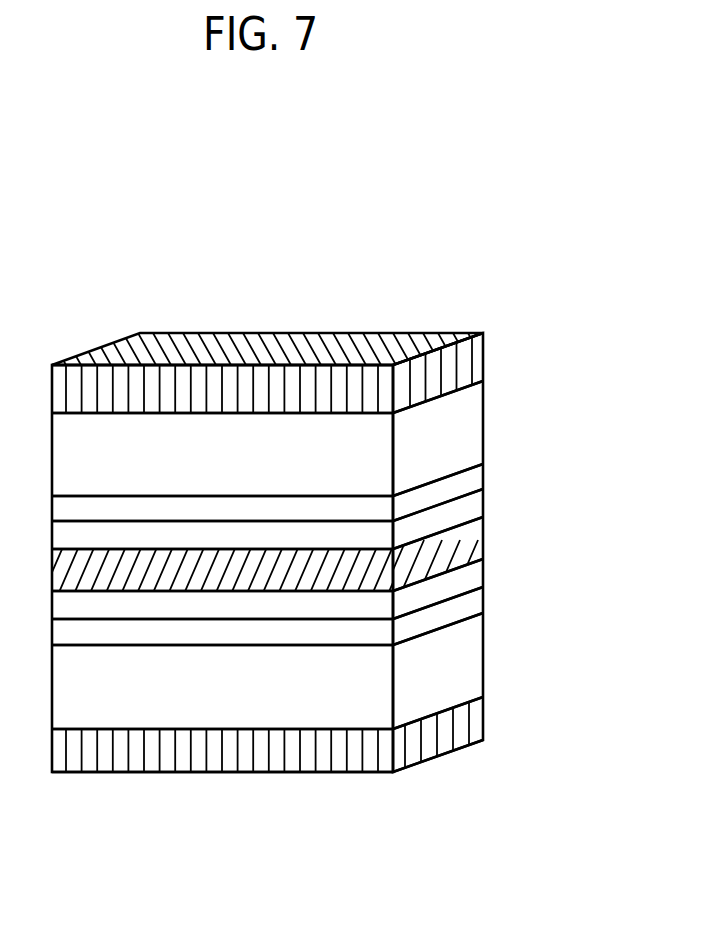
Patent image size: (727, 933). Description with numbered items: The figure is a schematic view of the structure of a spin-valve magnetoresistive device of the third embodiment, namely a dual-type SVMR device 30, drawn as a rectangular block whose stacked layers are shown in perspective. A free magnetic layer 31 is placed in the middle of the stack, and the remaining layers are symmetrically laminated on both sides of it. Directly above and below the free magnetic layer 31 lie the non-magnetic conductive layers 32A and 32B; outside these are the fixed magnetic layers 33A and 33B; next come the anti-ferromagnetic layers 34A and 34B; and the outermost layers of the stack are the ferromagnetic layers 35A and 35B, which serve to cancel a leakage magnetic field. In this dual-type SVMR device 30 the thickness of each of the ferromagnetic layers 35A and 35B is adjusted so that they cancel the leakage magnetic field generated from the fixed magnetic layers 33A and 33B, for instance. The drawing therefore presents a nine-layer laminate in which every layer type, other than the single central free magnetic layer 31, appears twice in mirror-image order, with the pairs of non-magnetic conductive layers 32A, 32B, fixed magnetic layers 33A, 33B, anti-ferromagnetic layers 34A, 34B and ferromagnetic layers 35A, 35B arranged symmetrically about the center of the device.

The SVMR device 30 is at (510, 183).
The free magnetic layer 31 is at (470, 537).
The non-magnetic conductive layer 32A is at (475, 503).
The non-magnetic conductive layer 32B is at (475, 573).
The fixed magnetic layer 33A is at (475, 477).
The fixed magnetic layer 33B is at (470, 602).
The anti-ferromagnetic layer 34A is at (468, 430).
The anti-ferromagnetic layer 34B is at (475, 645).
The ferromagnetic layer 35A is at (477, 355).
The ferromagnetic layer 35B is at (482, 717).